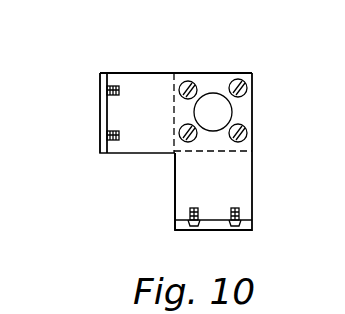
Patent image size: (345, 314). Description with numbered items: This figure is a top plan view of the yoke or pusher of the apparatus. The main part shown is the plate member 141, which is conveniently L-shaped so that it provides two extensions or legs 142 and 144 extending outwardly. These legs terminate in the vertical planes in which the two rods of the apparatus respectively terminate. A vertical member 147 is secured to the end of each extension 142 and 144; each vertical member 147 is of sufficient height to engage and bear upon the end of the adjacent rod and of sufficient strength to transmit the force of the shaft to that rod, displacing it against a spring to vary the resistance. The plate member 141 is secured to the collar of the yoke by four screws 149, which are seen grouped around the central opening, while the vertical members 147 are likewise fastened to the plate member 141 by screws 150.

The plate member 141 is at (243, 183).
The extension 142 is at (157, 73).
The extension 144 is at (175, 185).
The vertical member 147 is at (101, 112).
The screws 149 is at (246, 128).
The screws 150 is at (101, 86).